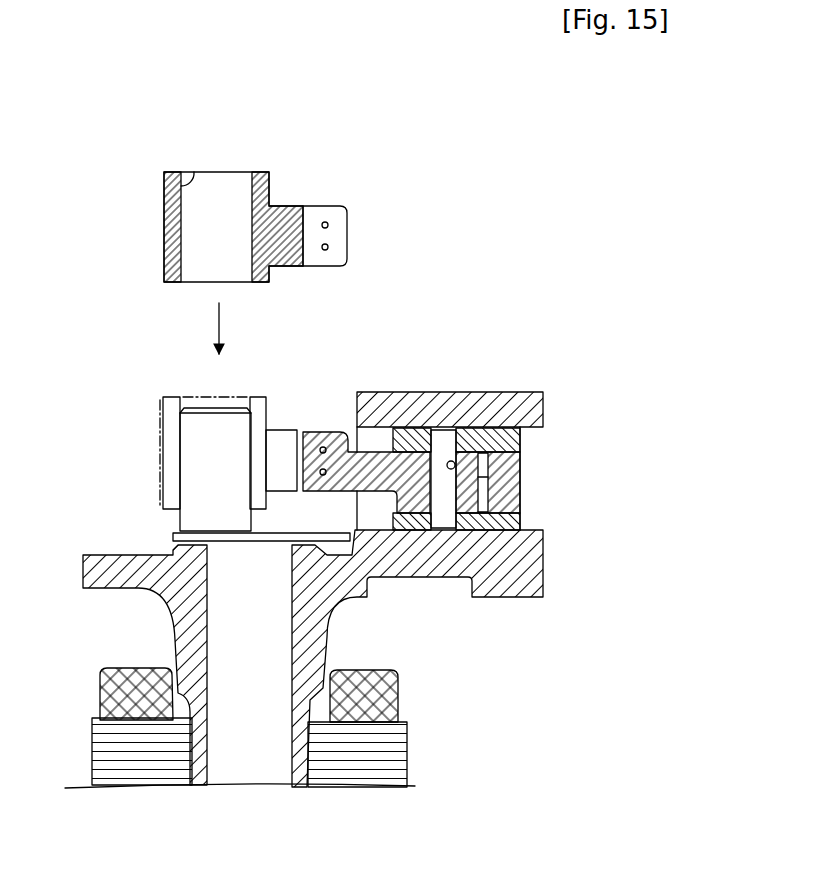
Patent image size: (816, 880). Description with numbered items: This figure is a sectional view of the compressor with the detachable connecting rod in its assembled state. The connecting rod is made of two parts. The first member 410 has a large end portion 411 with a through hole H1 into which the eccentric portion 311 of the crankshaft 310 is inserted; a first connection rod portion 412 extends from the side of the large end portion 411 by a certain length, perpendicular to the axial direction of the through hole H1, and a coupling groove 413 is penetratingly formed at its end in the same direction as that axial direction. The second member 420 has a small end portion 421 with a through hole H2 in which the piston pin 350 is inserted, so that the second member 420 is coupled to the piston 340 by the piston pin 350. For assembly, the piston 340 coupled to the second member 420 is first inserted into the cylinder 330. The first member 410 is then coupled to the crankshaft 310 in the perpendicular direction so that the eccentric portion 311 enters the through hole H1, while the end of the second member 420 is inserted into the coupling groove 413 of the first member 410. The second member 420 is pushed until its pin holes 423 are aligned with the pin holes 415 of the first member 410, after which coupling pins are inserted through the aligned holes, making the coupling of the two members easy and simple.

The crankshaft 310 is at (300, 640).
The eccentric portion 311 is at (190, 470).
The cylinder 330 is at (462, 390).
The piston 340 is at (501, 424).
The piston pin 350 is at (445, 503).
The first member 410 is at (167, 161).
The large end portion 411 is at (164, 214).
The first connection rod portion 412 is at (288, 214).
The coupling groove 413 is at (311, 210).
The pin holes 415 is at (328, 247).
The second member 420 is at (380, 447).
The small end portion 421 is at (467, 480).
The pin holes 423 is at (322, 469).
The through hole H1 is at (193, 180).
The through hole H2 is at (455, 459).